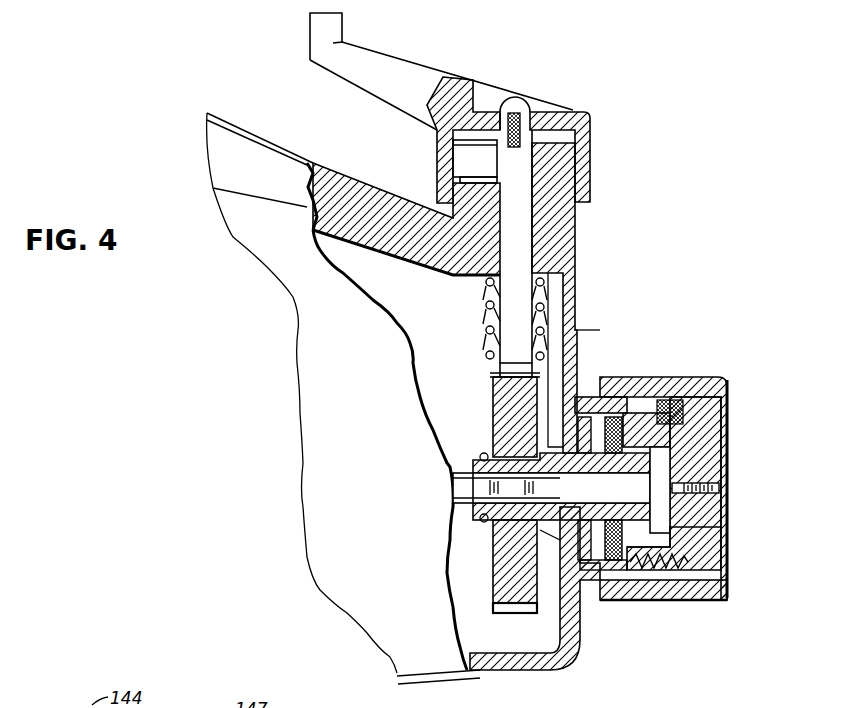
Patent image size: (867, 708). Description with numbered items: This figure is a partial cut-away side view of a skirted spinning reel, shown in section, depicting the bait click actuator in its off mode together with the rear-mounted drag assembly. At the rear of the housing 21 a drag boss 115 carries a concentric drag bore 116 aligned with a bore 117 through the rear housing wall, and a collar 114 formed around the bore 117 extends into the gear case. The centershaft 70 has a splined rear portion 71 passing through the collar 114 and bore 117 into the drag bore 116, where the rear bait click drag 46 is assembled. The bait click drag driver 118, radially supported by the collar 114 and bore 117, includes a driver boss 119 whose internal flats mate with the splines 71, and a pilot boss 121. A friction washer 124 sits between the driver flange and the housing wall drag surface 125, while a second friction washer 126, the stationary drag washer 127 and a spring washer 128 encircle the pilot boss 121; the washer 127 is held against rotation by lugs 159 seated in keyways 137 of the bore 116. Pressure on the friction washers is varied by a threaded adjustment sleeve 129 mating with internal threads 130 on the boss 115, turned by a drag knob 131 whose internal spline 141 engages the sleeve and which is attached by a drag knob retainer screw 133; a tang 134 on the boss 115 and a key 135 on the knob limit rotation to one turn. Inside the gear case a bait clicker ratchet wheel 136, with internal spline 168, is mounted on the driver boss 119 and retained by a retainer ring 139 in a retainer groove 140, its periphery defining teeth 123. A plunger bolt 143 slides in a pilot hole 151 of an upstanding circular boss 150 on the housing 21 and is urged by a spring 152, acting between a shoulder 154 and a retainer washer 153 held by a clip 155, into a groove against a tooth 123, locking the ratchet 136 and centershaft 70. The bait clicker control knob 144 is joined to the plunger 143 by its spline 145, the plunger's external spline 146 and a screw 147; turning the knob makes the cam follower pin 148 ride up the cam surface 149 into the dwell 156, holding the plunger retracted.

The housing 21 is at (512, 668).
The rear bait click drag 46 is at (727, 377).
The centershaft 70 is at (460, 490).
The splined rear portion 71 is at (480, 462).
The collar 114 is at (552, 535).
The drag boss 115 is at (587, 400).
The drag bore 116 is at (655, 385).
The bore 117 is at (577, 473).
The bait click drag driver 118 is at (610, 598).
The driver boss 119 is at (497, 526).
The pilot boss 121 is at (650, 435).
The teeth 123 is at (510, 607).
The friction washer 124 is at (573, 400).
The housing wall drag surface 125 is at (583, 583).
The second friction washer 126 is at (683, 383).
The stationary drag washer 127 is at (717, 597).
The spring washer 128 is at (697, 562).
The threaded adjustment sleeve 129 is at (693, 517).
The internal threads 130 is at (650, 460).
The drag knob 131 is at (675, 470).
The drag knob retainer screw 133 is at (717, 487).
The tang 134 is at (612, 380).
The key 135 is at (622, 392).
The bait clicker ratchet wheel 136 is at (498, 597).
The keyways 137 is at (593, 433).
The retainer ring 139 is at (478, 522).
The retainer groove 140 is at (480, 518).
The internal polygon or spline 141 is at (700, 542).
The plunger bolt 143 is at (585, 268).
The bait clicker control knob 144 is at (455, 83).
The spline 145 is at (528, 117).
The external spline 146 is at (533, 124).
The screw 147 is at (517, 110).
The cam follower pin 148 is at (465, 184).
The cam surface 149 is at (460, 158).
The upstanding circular boss 150 is at (565, 180).
The pilot hole 151 is at (535, 228).
The spring 152 is at (522, 300).
The retainer washer 153 is at (483, 358).
The shoulder 154 is at (467, 277).
The clip 155 is at (488, 367).
The dwell 156 is at (450, 138).
The lugs 159 is at (643, 600).
The internal spline 168 is at (467, 460).